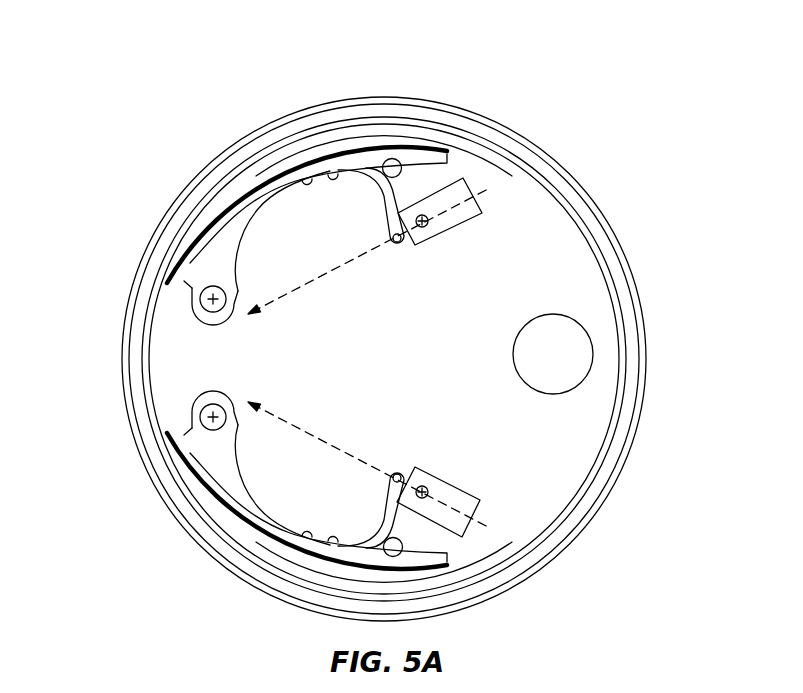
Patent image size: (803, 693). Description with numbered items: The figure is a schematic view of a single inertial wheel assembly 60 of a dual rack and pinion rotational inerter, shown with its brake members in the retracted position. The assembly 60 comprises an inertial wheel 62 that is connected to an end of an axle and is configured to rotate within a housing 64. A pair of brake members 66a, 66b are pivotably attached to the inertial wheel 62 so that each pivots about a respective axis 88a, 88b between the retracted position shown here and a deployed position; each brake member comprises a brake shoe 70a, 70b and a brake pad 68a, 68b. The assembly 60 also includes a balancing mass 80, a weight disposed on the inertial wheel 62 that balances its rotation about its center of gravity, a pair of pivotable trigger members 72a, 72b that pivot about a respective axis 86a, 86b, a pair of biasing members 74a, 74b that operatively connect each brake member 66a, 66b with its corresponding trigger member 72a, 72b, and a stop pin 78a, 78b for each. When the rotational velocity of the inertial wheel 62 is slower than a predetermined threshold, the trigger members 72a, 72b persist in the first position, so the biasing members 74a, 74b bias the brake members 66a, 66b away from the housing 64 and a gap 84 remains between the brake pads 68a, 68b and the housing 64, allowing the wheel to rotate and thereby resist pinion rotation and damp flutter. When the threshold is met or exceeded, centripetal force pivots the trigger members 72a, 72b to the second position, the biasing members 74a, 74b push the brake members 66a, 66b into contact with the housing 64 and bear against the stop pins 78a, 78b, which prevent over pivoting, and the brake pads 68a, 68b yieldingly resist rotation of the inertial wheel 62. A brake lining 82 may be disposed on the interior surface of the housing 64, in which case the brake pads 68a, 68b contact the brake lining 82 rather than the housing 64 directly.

The inertial wheel assembly 60 is at (560, 68).
The inertial wheel 62 is at (409, 353).
The housing 64 is at (267, 122).
The brake member 66a is at (178, 309).
The brake member 66b is at (178, 402).
The brake pad 68a is at (192, 232).
The brake pad 68b is at (428, 574).
The brake shoe 70a is at (229, 276).
The brake shoe 70b is at (224, 455).
The trigger member 72a is at (460, 228).
The trigger member 72b is at (458, 484).
The biasing member 74a is at (383, 190).
The biasing member 74b is at (382, 512).
The stop pin 78a is at (402, 162).
The stop pin 78b is at (404, 557).
The balancing mass 80 is at (563, 364).
The brake lining 82 is at (252, 150).
The gap 84 is at (230, 177).
The axis 86a is at (424, 227).
The axis 86b is at (423, 486).
The axis 88a is at (220, 318).
The axis 88b is at (218, 412).